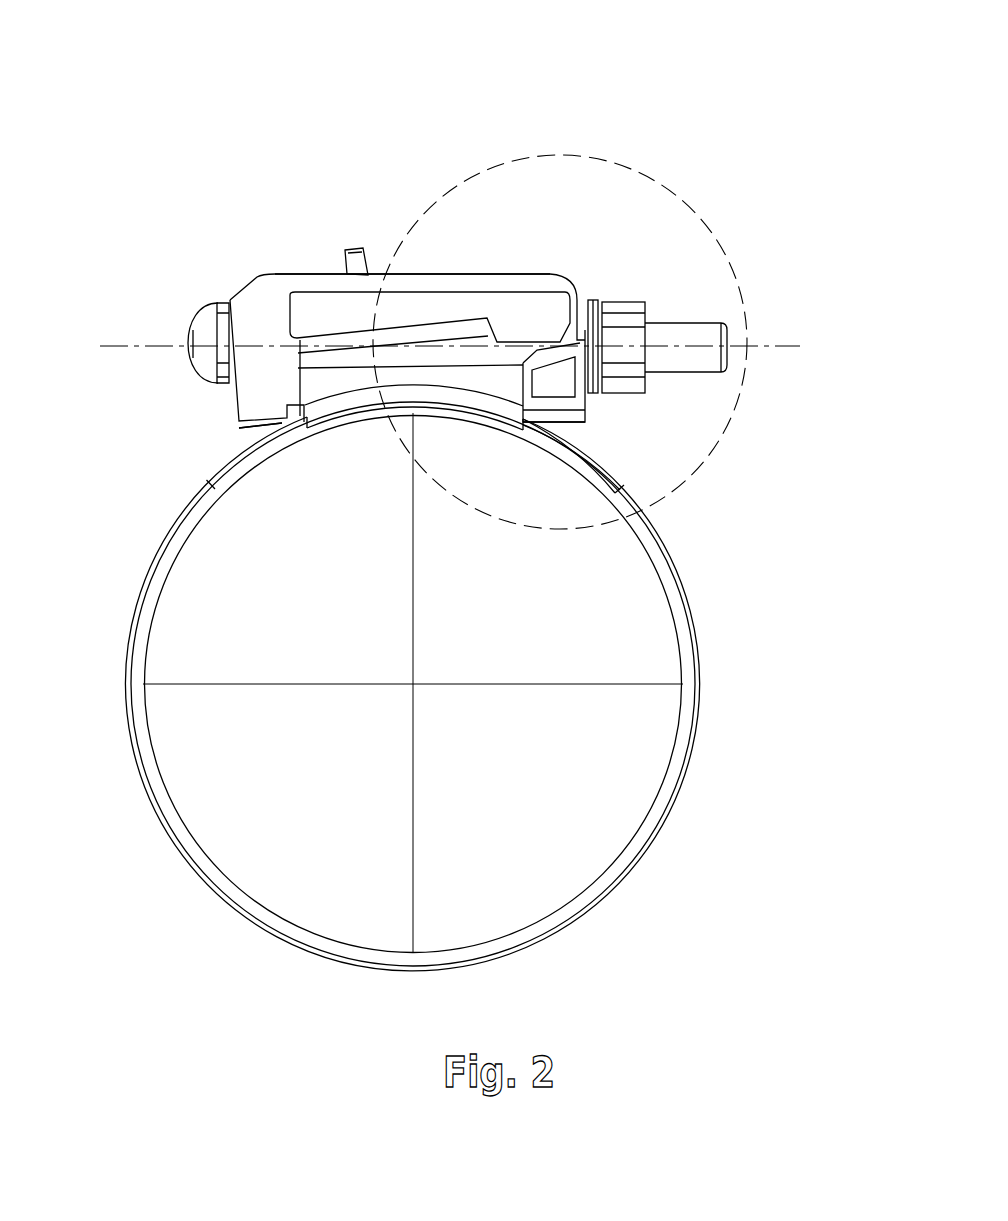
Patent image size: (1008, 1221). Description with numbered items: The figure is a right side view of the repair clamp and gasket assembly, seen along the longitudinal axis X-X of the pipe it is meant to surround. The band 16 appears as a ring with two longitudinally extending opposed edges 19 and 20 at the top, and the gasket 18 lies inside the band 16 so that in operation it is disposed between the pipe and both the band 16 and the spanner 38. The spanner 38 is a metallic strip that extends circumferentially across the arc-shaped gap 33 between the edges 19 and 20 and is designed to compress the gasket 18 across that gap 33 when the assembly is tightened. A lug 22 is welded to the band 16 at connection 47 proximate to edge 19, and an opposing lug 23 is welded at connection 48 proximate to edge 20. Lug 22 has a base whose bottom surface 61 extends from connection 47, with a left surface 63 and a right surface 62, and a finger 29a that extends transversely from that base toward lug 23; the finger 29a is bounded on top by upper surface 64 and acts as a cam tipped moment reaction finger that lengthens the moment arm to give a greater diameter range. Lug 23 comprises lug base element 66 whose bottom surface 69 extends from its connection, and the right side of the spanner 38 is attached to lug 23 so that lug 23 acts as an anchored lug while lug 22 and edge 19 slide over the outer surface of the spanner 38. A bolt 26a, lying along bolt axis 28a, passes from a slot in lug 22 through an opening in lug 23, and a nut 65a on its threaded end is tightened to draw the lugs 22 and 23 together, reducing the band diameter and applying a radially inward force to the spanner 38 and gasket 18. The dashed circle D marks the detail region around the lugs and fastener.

The band 16 is at (453, 686).
The gasket 18 is at (407, 684).
The longitudinal axis X-X is at (413, 683).
The bolt axis 28a is at (485, 298).
The detail region D is at (560, 267).
The right surface 62 is at (460, 272).
The upper surface 64 is at (432, 252).
The finger 29a is at (420, 184).
The lug base element 66 is at (649, 392).
The lug 23 is at (626, 410).
The nut 65a is at (688, 268).
The bolt 26a is at (741, 276).
The left surface 63 is at (138, 361).
The lug 22 is at (158, 384).
The bottom surface 61 is at (176, 486).
The arc-shaped gap 33 is at (414, 423).
The longitudinally extending edge 19 is at (360, 471).
The connection 47 is at (340, 499).
The longitudinally extending edge 20 is at (468, 471).
The connection 48 is at (486, 500).
The bottom surface 69 is at (655, 508).
The spanner 38 is at (559, 521).